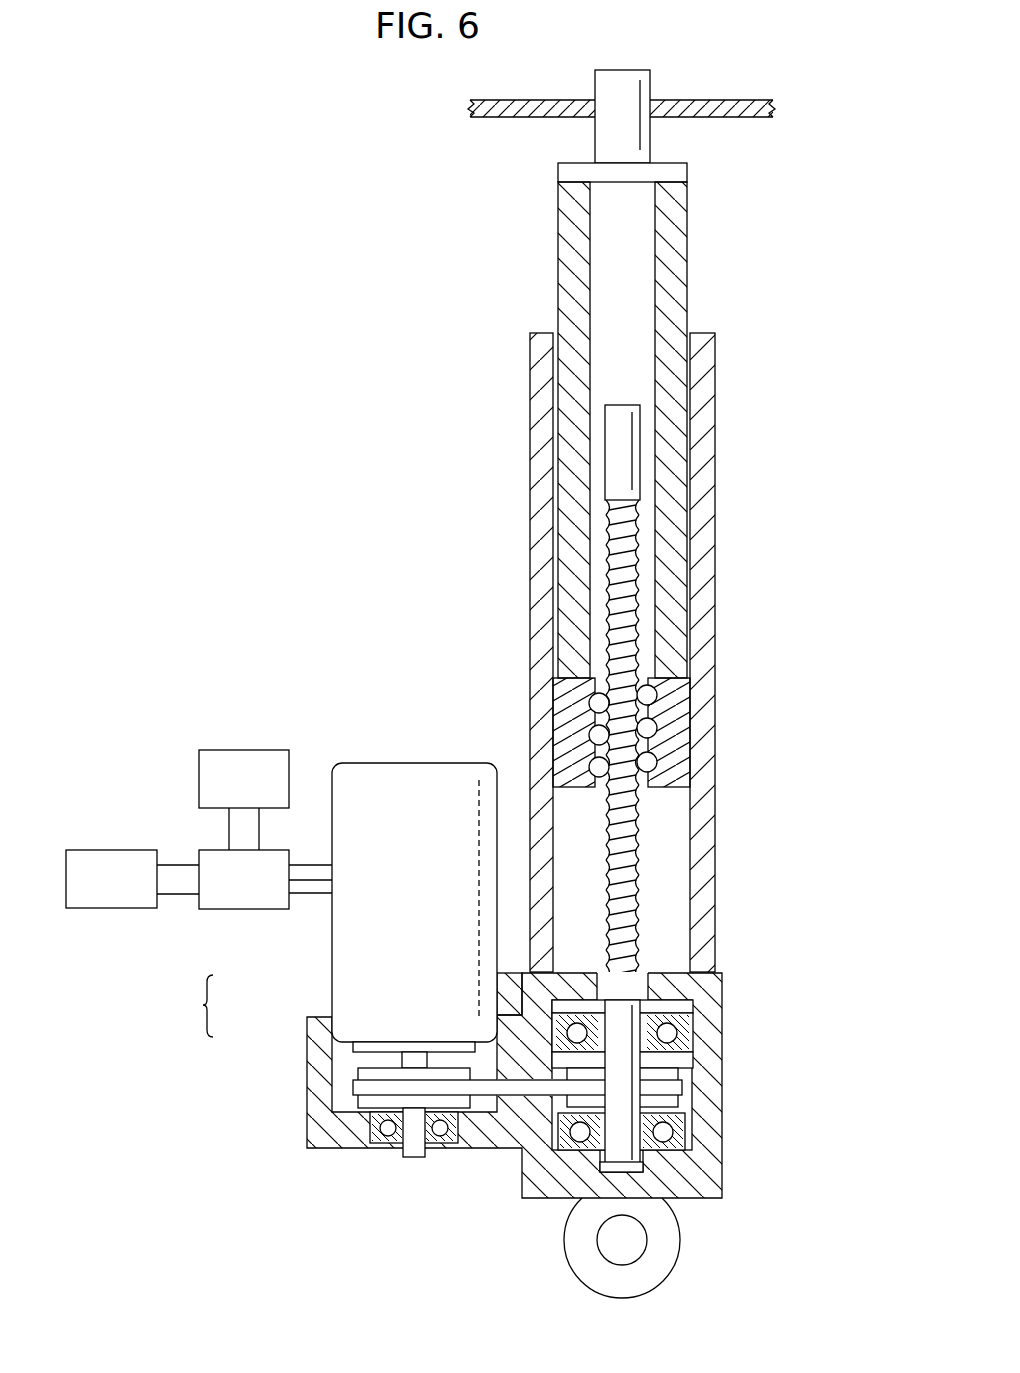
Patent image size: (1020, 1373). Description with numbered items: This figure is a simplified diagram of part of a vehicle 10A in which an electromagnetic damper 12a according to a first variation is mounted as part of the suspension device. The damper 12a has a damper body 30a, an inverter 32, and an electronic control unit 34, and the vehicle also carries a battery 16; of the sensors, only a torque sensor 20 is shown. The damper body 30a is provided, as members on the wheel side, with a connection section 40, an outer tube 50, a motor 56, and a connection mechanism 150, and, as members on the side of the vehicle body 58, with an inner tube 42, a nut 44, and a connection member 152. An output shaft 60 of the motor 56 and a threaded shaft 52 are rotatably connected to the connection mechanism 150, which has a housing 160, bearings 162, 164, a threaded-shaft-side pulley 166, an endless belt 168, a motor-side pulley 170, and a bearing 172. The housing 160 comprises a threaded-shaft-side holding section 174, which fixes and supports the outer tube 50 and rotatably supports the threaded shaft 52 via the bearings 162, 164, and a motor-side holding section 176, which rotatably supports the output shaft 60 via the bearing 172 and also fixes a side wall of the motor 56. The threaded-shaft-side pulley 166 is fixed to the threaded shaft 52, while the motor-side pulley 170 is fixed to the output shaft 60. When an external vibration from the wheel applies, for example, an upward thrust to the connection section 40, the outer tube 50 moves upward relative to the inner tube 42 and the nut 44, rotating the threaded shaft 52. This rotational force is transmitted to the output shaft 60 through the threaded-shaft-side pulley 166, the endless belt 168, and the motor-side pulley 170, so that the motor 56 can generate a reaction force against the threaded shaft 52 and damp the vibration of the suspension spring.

The connection member 152 is at (597, 83).
The vehicle body 58 is at (740, 117).
The inner tube 42 is at (682, 249).
The vehicle 10A is at (224, 253).
The damper body 30a is at (514, 413).
The electromagnetic damper 12a is at (411, 475).
The threaded shaft 52 is at (628, 540).
The nut 44 is at (680, 732).
The outer tube 50 is at (710, 828).
The electronic control unit 34 is at (220, 750).
The motor 56 is at (391, 772).
The battery 16 is at (82, 849).
The inverter 32 is at (220, 910).
The housing 160 is at (188, 1006).
The threaded-shaft-side holding section 174 is at (522, 993).
The motor-side holding section 176 is at (305, 1037).
The torque sensor 20 is at (450, 1048).
The bearing 164 is at (687, 1025).
The connection mechanism 150 is at (727, 1078).
The threaded-shaft-side pulley 166 is at (673, 1102).
The bearing 162 is at (678, 1140).
The motor-side pulley 170 is at (365, 1105).
The output shaft 60 is at (414, 1153).
The bearing 172 is at (438, 1143).
The endless belt 168 is at (515, 1085).
The connection section 40 is at (572, 1252).